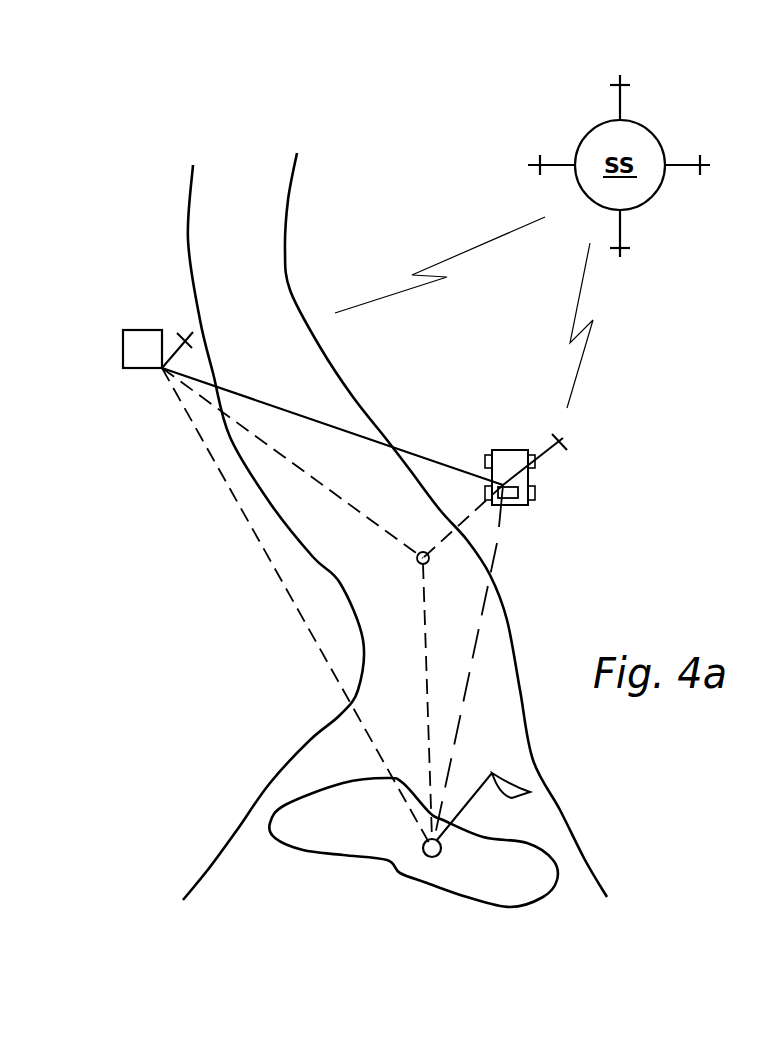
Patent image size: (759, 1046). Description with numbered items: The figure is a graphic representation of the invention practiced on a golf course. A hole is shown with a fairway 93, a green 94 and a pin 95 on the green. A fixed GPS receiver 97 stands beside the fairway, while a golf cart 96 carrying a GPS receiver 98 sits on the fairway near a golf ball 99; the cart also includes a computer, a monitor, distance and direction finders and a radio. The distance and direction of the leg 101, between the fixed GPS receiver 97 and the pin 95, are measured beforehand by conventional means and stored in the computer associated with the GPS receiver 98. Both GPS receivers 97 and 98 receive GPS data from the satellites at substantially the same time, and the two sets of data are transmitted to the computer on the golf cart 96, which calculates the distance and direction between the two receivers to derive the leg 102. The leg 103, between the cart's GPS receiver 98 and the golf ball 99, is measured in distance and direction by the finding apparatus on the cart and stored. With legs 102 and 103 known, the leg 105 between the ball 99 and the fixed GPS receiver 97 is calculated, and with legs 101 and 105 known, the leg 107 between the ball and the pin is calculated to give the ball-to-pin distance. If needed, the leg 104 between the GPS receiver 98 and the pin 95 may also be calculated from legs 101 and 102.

The fairway 93 is at (254, 246).
The green 94 is at (369, 832).
The pin 95 is at (415, 860).
The golf cart 96 is at (503, 450).
The fixed GPS receiver 97 is at (123, 353).
The GPS receiver 98 is at (518, 492).
The golf ball 99 is at (417, 557).
The leg 101 is at (287, 590).
The leg 102 is at (440, 460).
The leg 103 is at (470, 515).
The leg 104 is at (477, 640).
The leg 105 is at (367, 517).
The leg 107 is at (428, 733).